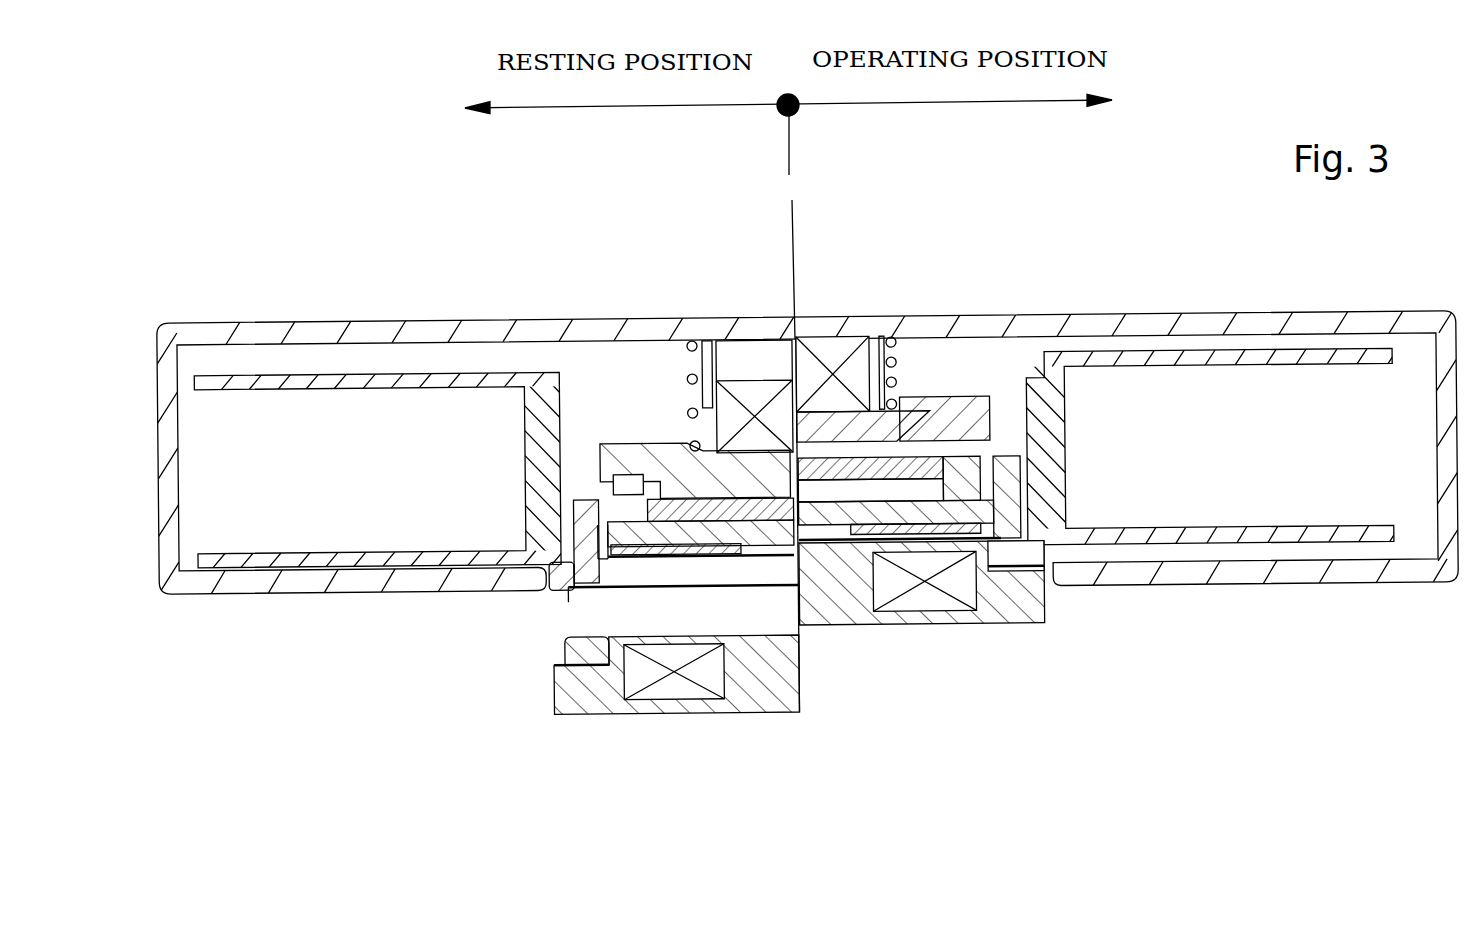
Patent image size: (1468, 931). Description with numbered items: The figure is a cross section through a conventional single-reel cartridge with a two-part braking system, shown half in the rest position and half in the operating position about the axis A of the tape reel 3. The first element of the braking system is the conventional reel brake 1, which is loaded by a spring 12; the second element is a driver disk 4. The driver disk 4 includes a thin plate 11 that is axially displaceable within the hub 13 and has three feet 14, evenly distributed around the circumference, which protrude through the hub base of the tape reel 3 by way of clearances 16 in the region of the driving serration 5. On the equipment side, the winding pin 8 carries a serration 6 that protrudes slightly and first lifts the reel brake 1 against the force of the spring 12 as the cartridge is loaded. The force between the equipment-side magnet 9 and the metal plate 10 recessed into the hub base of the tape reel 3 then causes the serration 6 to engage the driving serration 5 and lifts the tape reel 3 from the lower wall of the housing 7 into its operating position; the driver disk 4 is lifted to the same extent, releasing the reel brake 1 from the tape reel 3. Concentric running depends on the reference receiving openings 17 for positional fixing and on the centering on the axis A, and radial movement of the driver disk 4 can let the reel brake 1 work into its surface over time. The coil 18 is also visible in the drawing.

The reel brake 1 is at (970, 412).
The tape reel 3 is at (379, 382).
The driver disk 4 is at (584, 500).
The driving serration 5 is at (565, 575).
The serration 6 is at (585, 648).
The housing 7 is at (355, 583).
The winding pin 8 is at (760, 697).
The magnet 9 is at (637, 677).
The metal plate 10 is at (702, 555).
The thin plate 11 is at (840, 470).
The spring 12 is at (896, 355).
The hub 13 is at (537, 490).
The feet 14 is at (584, 582).
The clearances 16 is at (531, 572).
The reference receiving openings 17 is at (1290, 570).
The coil 18 is at (757, 397).
The axis A is at (793, 267).